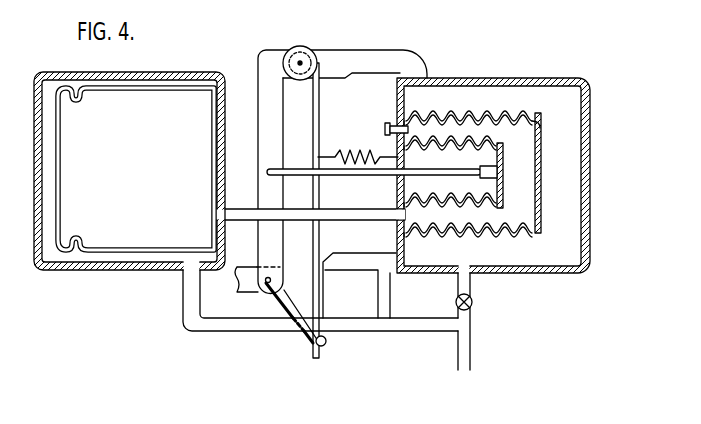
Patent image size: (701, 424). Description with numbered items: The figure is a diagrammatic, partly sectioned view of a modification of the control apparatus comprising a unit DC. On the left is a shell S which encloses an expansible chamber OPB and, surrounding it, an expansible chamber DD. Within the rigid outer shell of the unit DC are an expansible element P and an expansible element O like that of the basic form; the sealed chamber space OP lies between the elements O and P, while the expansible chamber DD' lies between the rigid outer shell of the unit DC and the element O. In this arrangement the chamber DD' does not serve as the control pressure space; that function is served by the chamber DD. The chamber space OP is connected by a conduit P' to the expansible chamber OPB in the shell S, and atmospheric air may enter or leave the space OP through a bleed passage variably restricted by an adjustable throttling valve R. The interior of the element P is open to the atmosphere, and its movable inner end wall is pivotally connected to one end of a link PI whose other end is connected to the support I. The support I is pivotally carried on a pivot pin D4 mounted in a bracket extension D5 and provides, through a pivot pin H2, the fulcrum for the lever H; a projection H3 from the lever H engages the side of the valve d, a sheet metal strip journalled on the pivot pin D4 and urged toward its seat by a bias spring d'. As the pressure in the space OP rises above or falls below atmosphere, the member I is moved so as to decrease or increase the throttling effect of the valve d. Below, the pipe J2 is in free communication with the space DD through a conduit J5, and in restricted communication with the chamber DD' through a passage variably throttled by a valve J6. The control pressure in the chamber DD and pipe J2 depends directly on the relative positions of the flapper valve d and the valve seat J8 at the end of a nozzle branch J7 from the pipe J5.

The shell S is at (157, 270).
The expansible chamber DD is at (136, 194).
The expansible chamber OPB is at (123, 175).
The support I is at (268, 66).
The pivot pin D4 is at (303, 61).
The bracket extension D5 is at (365, 52).
The valve d is at (303, 216).
The conduit P' is at (315, 198).
The control unit DC is at (628, 143).
The expansible element P is at (468, 146).
The expansible element O is at (541, 217).
The chamber space OP is at (532, 137).
The link PI is at (361, 175).
The bias spring d' is at (358, 146).
The adjustable throttling valve R is at (385, 128).
The expansible chamber DD' is at (598, 255).
The pivot pin H2 is at (262, 297).
The lever H is at (284, 297).
The projection H3 is at (327, 345).
The valve seat J8 is at (330, 262).
The nozzle branch J7 is at (385, 309).
The conduit J5 is at (432, 329).
The pipe section J2 is at (466, 358).
The valve J6 is at (473, 302).